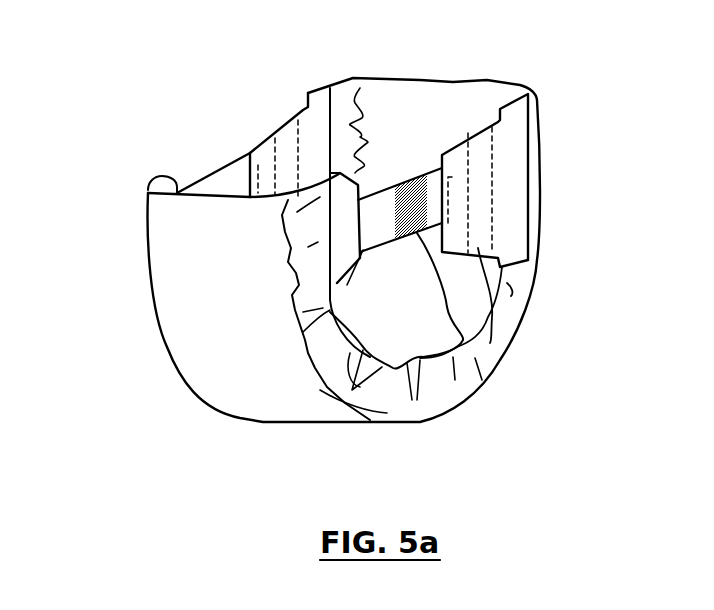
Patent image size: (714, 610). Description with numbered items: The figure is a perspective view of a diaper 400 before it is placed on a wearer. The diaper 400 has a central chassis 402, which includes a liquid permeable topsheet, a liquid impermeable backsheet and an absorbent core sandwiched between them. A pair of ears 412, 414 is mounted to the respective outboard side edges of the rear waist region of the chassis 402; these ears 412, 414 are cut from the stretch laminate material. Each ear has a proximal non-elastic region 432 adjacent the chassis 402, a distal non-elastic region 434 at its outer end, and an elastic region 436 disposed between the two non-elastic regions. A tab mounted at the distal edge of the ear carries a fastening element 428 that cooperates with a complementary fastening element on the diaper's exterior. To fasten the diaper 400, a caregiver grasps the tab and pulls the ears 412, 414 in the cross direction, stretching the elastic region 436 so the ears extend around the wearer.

The diaper 400 is at (145, 414).
The chassis 402 is at (280, 400).
The ear 412 is at (285, 145).
The ear 414 is at (480, 163).
The fastening element 428 is at (460, 343).
The proximal non-elastic region 432 is at (512, 153).
The distal non-elastic region 434 is at (458, 157).
The elastic region 436 is at (500, 268).